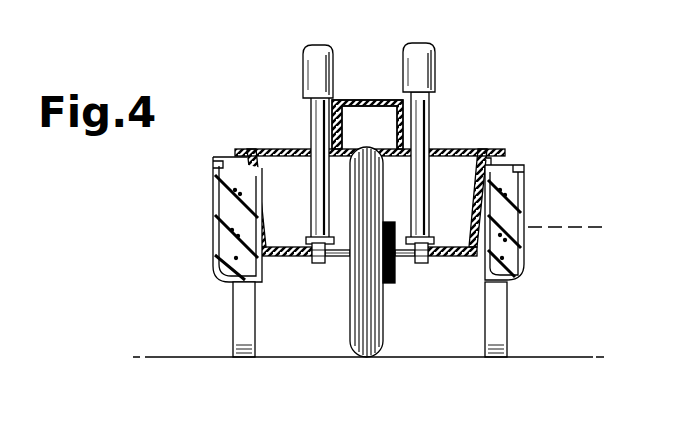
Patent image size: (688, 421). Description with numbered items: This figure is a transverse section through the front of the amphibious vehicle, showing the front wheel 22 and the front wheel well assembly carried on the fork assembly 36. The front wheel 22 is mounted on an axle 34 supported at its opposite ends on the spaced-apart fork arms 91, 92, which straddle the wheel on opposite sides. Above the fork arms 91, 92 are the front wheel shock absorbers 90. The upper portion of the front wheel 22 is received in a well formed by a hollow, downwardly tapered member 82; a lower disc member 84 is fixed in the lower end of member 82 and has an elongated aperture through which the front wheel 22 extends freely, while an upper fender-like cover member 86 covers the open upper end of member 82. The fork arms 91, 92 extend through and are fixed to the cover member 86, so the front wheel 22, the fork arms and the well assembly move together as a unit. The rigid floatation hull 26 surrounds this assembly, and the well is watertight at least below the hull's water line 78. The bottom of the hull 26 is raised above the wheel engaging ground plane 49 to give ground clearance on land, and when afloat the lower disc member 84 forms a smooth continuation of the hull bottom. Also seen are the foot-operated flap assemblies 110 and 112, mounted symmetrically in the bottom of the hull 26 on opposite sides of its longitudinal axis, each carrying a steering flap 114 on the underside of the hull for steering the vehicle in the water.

The front wheel 22 is at (359, 345).
The floatation hull 26 is at (537, 171).
The axle 34 is at (404, 263).
The fork assembly 36 is at (390, 132).
The wheel engaging ground plane 49 is at (557, 357).
The water line 78 is at (541, 227).
The downwardly tapered member 82 is at (370, 218).
The lower disc member 84 is at (458, 256).
The cover member 86 is at (386, 100).
The front wheel shock absorbers 90 is at (405, 49).
The fork arm 91 is at (311, 143).
The fork arm 92 is at (430, 133).
The flap assembly 110 is at (484, 316).
The flap assembly 112 is at (262, 322).
The steering flap 114 is at (238, 321).